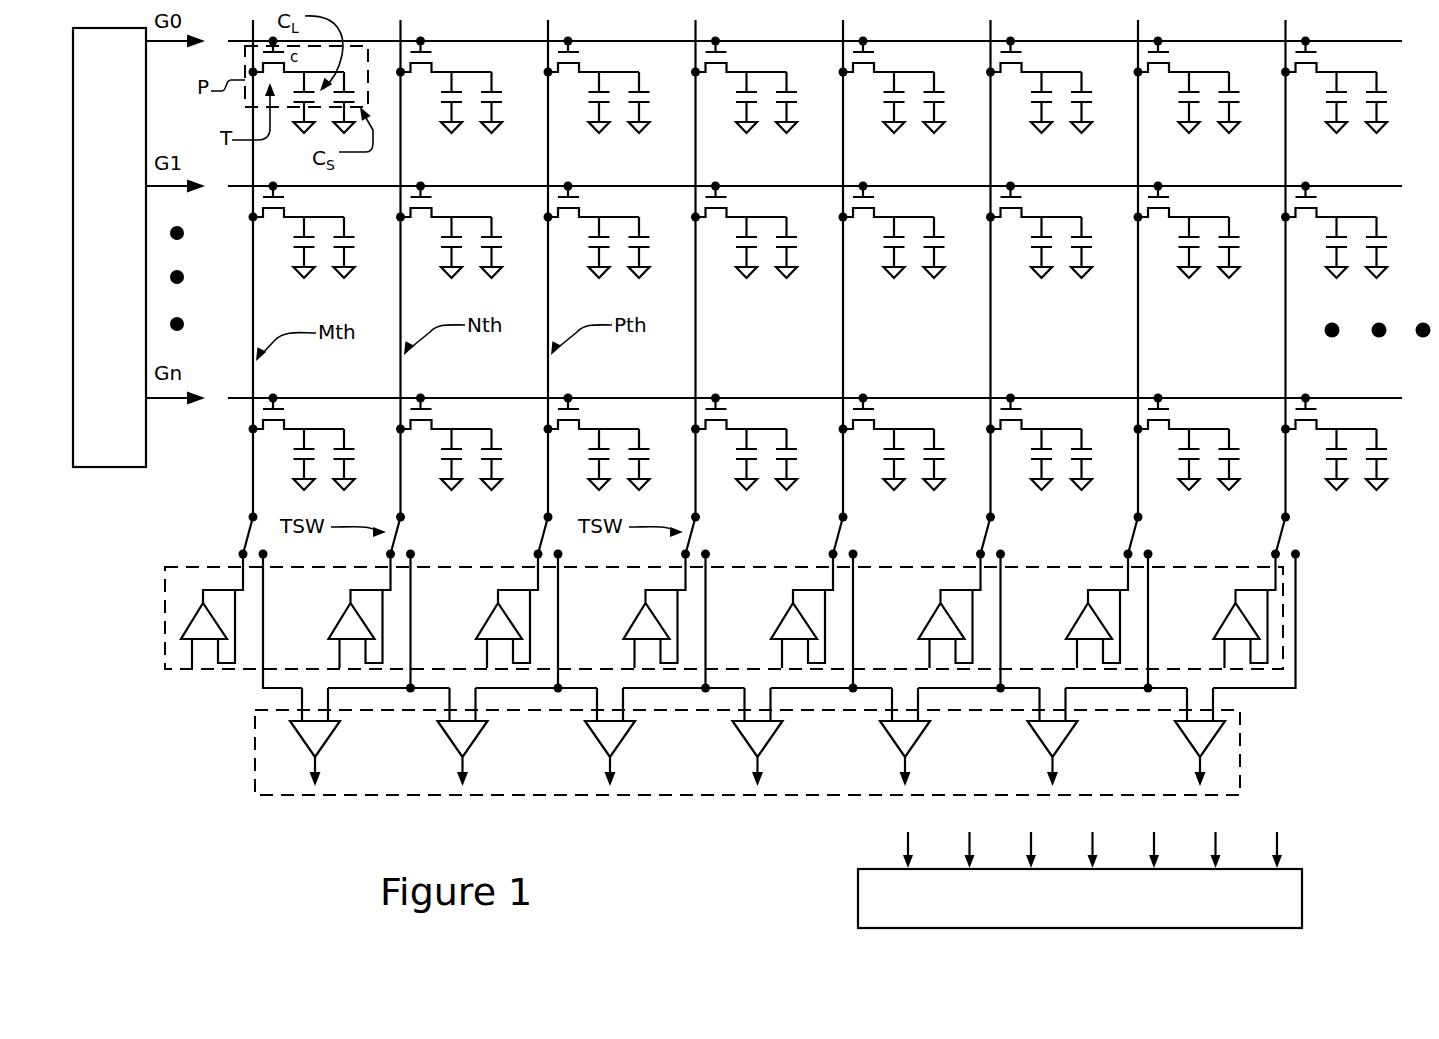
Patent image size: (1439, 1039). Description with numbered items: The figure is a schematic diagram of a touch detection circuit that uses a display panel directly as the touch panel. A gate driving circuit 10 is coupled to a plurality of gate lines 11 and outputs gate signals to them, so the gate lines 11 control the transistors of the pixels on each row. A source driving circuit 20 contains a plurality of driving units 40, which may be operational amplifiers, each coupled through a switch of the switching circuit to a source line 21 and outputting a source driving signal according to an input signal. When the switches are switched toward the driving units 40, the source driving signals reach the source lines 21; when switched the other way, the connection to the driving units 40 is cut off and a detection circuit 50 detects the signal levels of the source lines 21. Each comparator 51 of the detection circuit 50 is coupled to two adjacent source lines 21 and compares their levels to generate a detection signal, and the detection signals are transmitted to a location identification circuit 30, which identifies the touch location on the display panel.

The gate driving circuit 10 is at (123, 467).
The gate lines 11 is at (908, 398).
The source driving circuit 20 is at (748, 590).
The source lines 21 is at (697, 318).
The location identification circuit 30 is at (1302, 905).
The driving units 40 is at (790, 616).
The detection circuit 50 is at (810, 741).
The comparators 51 is at (774, 735).